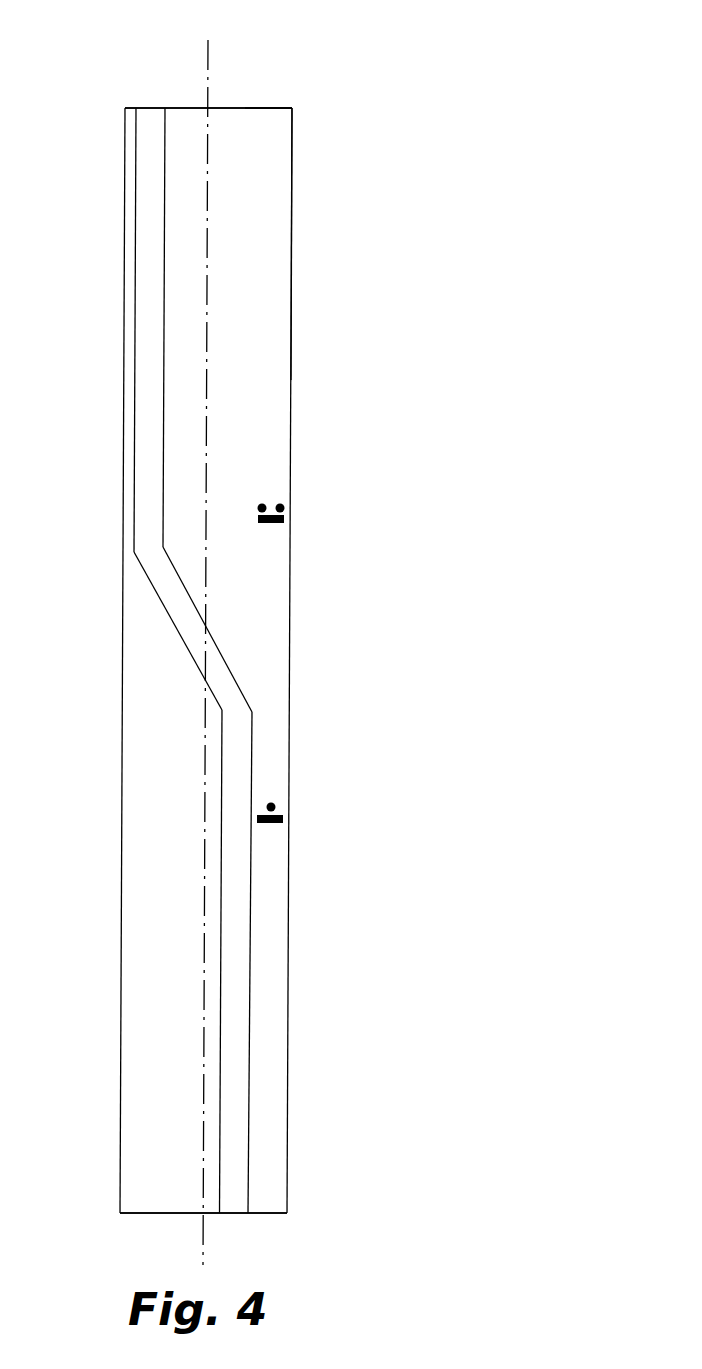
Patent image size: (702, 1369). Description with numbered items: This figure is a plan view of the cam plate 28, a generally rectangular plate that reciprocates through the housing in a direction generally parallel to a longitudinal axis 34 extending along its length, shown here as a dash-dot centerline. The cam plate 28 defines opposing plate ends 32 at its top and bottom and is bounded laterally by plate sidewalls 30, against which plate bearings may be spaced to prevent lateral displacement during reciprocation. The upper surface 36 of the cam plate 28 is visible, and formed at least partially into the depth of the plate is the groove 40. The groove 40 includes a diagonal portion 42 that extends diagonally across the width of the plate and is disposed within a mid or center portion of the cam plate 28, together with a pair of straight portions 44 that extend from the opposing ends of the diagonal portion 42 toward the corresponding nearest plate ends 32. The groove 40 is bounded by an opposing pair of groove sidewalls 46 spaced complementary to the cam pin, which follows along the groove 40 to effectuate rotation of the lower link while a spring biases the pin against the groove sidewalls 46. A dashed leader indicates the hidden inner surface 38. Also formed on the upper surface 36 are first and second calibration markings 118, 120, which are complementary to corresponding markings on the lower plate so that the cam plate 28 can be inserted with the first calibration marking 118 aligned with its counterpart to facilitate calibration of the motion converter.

The cam plate 28 is at (446, 319).
The plate sidewalls 30 is at (120, 1135).
The plate ends 32 is at (270, 108).
The longitudinal axis 34 is at (209, 53).
The upper surface 36 is at (262, 278).
The inner surface 38 is at (245, 211).
The groove 40 is at (226, 662).
The diagonal portion 42 is at (207, 631).
The straight portions 44 is at (165, 357).
The groove sidewalls 46 is at (251, 905).
The first calibration marking 118 is at (277, 807).
The second calibration marking 120 is at (285, 512).